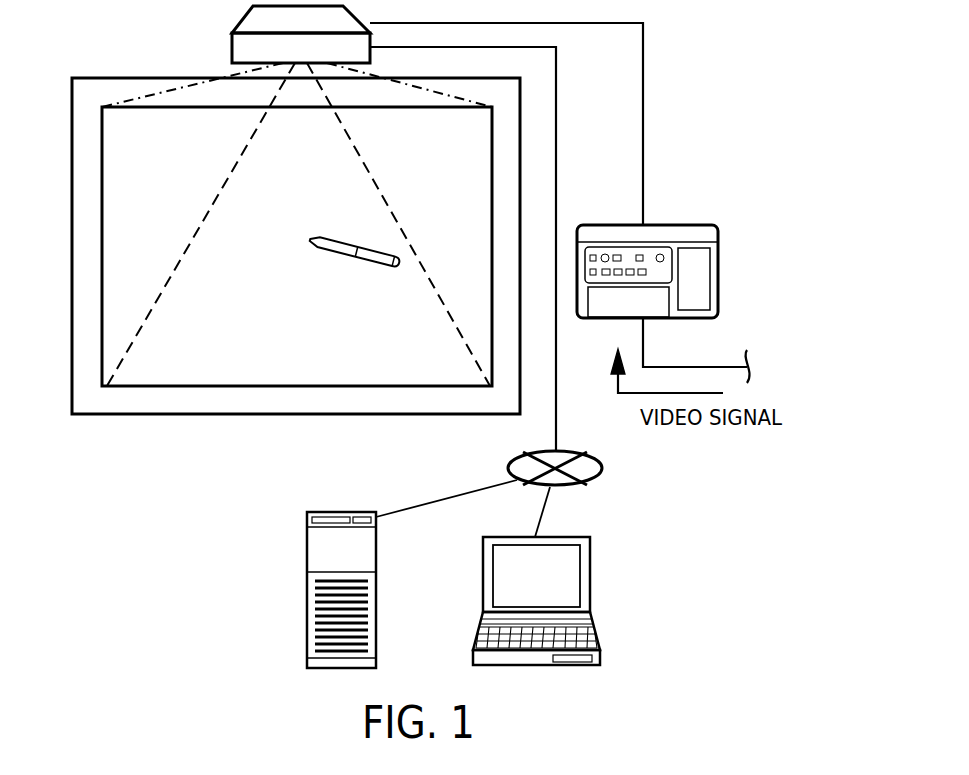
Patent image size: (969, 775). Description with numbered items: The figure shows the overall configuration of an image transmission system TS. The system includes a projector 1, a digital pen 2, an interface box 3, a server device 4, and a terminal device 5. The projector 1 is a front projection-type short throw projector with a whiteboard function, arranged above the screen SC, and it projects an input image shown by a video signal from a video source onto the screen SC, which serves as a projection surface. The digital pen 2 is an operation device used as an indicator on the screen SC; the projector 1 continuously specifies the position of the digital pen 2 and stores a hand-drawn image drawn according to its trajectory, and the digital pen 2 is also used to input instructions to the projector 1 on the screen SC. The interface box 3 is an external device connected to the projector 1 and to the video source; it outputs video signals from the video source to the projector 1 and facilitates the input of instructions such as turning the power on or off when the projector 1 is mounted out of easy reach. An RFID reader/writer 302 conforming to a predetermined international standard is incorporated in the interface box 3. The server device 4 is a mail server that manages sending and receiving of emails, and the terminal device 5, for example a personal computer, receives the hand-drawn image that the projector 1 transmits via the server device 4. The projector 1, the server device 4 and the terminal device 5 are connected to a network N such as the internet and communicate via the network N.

The projector 1 is at (232, 50).
The digital pen 2 is at (338, 251).
The interface box 3 is at (652, 244).
The RFID reader/writer 302 is at (695, 256).
The server device 4 is at (307, 526).
The terminal device 5 is at (545, 537).
The network N is at (507, 467).
The screen SC is at (141, 414).
The image transmission system TS is at (113, 542).